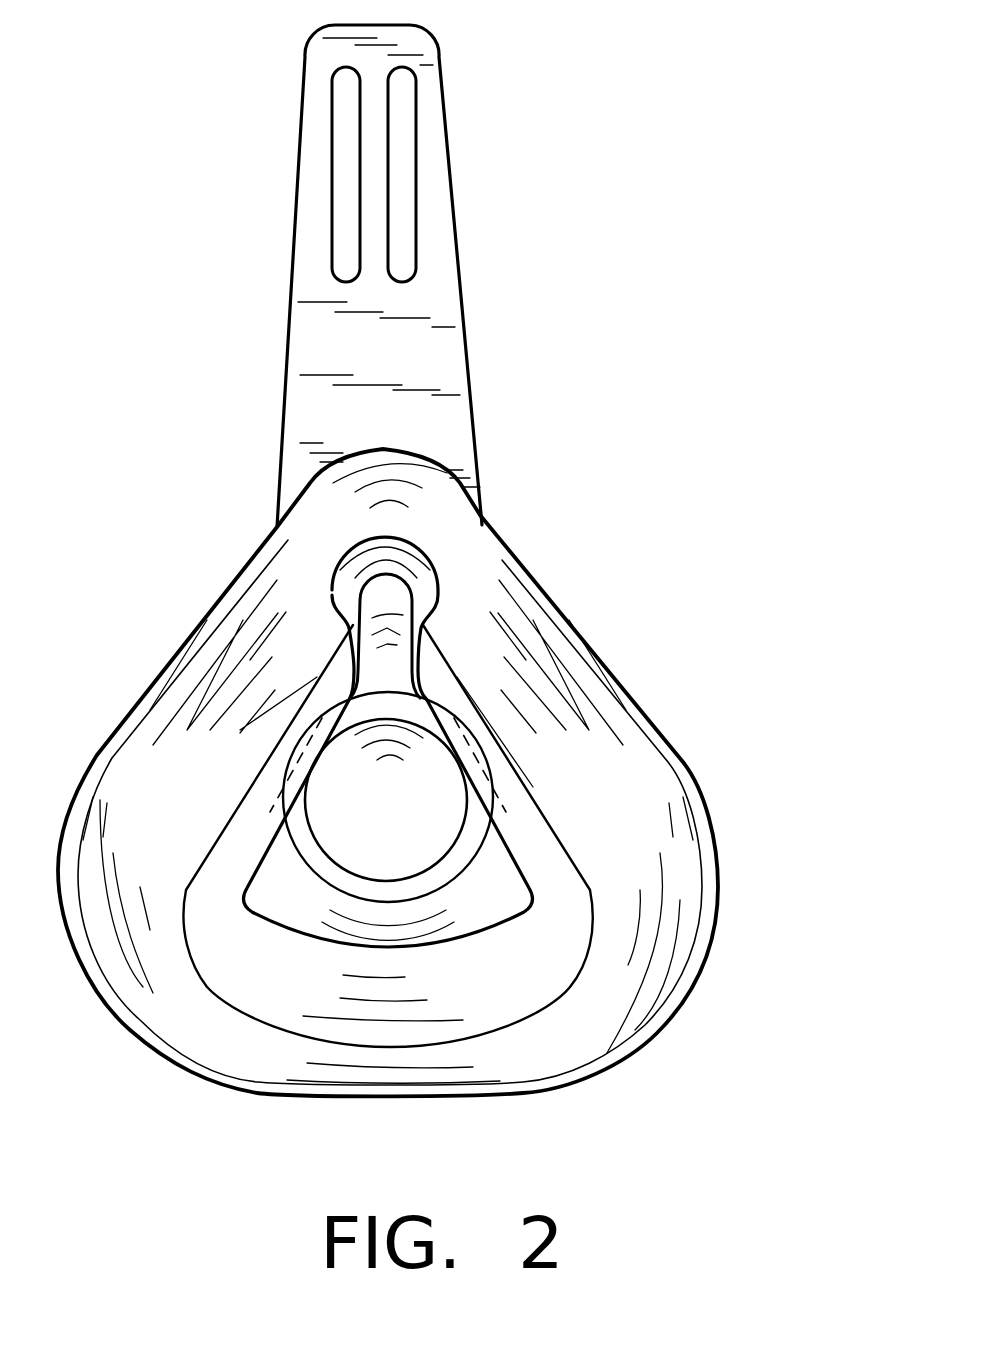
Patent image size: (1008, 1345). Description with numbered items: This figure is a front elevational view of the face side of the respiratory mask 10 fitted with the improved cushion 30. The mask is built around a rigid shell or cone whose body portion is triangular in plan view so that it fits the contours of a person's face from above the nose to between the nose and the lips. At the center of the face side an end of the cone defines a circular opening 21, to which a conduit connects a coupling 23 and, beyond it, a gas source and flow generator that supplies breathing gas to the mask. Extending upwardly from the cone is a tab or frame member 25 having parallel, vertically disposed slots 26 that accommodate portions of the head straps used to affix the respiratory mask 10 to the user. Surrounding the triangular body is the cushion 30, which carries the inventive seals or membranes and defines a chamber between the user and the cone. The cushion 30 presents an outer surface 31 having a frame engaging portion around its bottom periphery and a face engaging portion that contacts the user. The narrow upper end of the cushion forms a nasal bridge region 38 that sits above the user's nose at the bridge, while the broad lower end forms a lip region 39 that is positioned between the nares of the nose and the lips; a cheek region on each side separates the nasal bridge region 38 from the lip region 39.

The respiratory mask 10 is at (802, 370).
The circular opening 21 is at (407, 830).
The coupling 23 is at (313, 873).
The tab or frame member 25 is at (450, 152).
The slots 26 is at (413, 182).
The cushion 30 is at (580, 619).
The outer surface 31 is at (662, 772).
The nasal bridge region 38 is at (452, 563).
The lip region 39 is at (287, 1002).